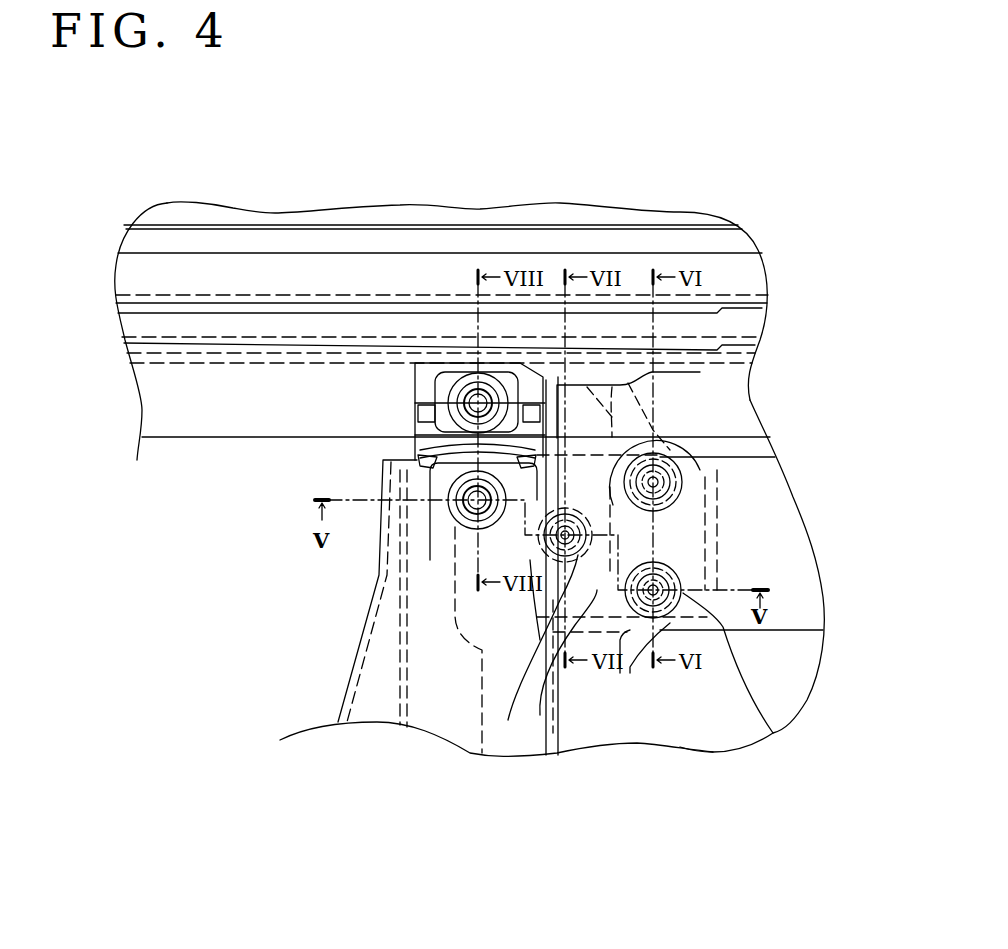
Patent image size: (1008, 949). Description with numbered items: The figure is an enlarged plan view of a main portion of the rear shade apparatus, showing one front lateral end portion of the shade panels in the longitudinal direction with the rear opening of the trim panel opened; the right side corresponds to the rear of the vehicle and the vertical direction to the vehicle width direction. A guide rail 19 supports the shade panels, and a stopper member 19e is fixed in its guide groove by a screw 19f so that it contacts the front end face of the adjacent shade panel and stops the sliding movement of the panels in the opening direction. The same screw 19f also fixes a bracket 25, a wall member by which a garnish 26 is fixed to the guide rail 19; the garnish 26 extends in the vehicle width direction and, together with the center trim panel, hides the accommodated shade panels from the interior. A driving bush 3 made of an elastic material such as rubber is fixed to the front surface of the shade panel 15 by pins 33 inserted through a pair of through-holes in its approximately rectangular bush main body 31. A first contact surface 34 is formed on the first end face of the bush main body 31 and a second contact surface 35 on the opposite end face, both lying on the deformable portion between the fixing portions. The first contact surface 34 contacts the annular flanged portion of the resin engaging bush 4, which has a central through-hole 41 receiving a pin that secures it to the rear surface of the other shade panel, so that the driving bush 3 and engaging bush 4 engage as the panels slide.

The guide rail 19 is at (383, 225).
The stopper member 19e is at (425, 383).
The screw 19f is at (463, 390).
The pin 33 is at (710, 462).
The bracket 25 is at (450, 480).
The garnish 26 is at (378, 680).
The bush main body 31 is at (680, 523).
The second contact surface 35 is at (715, 533).
The driving bush 3 is at (708, 541).
The shade panel 15 is at (753, 577).
The engaging bush 4 is at (540, 572).
The through-hole 41 is at (508, 720).
The first contact surface 34 is at (540, 715).